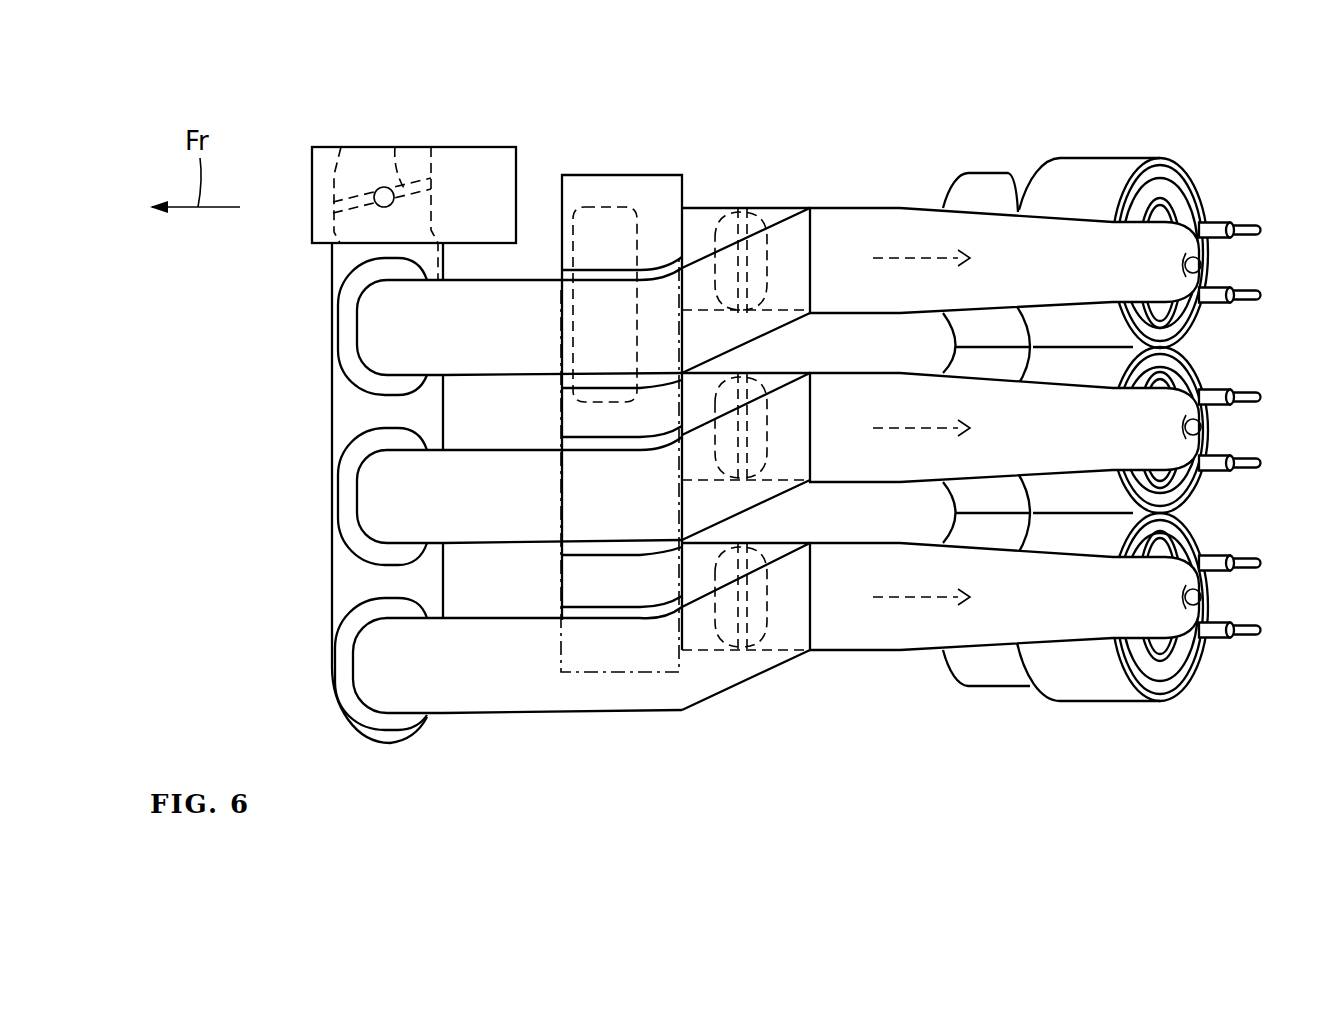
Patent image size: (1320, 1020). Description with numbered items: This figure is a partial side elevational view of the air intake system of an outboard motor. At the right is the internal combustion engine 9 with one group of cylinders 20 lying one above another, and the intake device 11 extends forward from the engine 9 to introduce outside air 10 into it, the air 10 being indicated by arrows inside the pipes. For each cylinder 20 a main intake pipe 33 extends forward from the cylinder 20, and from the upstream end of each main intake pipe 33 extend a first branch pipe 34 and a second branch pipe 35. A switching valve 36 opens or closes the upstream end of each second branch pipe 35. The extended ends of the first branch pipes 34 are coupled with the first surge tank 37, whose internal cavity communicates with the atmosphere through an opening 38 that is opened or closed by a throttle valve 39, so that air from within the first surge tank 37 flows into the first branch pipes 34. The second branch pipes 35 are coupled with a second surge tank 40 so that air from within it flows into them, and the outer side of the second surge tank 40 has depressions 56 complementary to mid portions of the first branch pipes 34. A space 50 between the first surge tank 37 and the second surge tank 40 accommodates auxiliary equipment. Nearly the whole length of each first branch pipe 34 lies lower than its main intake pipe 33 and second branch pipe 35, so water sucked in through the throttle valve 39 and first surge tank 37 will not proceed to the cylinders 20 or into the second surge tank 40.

The internal combustion engine 9 is at (1190, 373).
The air 10 is at (914, 258).
The intake device 11 is at (715, 406).
The cylinder 20 is at (1132, 157).
The main intake pipe 33 is at (1008, 245).
The first branch pipe 34 is at (520, 297).
The second branch pipe 35 is at (848, 245).
The switching valve 36 is at (713, 200).
The first surge tank 37 is at (332, 330).
The opening 38 is at (341, 147).
The throttle valve 39 is at (395, 147).
The second surge tank 40 is at (657, 190).
The space 50 is at (470, 403).
The depression 56 is at (602, 293).